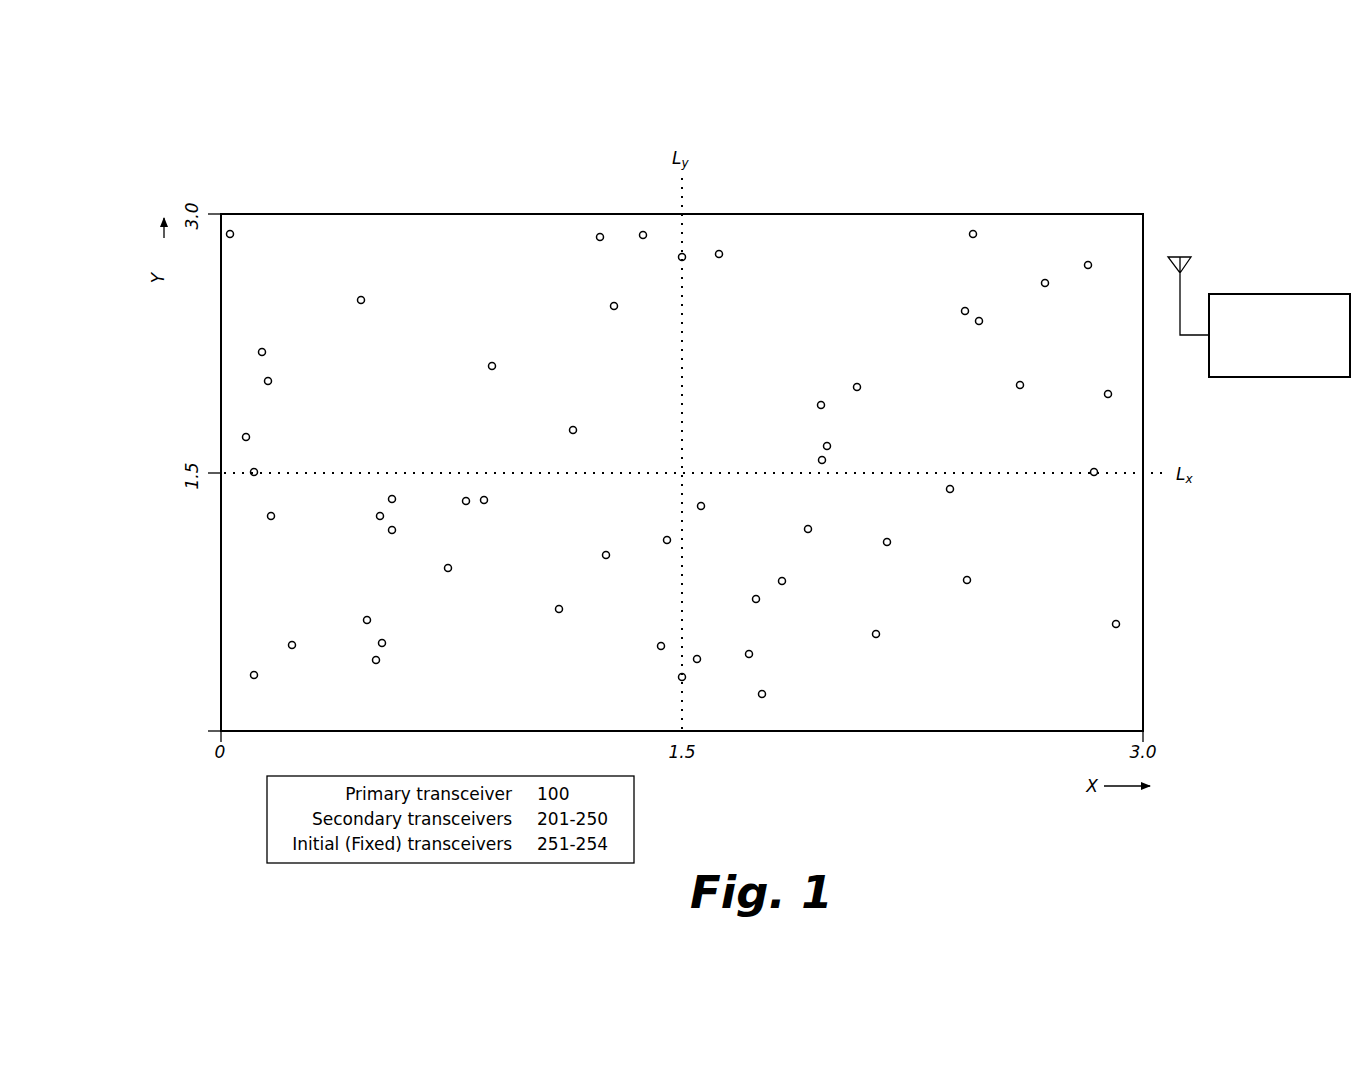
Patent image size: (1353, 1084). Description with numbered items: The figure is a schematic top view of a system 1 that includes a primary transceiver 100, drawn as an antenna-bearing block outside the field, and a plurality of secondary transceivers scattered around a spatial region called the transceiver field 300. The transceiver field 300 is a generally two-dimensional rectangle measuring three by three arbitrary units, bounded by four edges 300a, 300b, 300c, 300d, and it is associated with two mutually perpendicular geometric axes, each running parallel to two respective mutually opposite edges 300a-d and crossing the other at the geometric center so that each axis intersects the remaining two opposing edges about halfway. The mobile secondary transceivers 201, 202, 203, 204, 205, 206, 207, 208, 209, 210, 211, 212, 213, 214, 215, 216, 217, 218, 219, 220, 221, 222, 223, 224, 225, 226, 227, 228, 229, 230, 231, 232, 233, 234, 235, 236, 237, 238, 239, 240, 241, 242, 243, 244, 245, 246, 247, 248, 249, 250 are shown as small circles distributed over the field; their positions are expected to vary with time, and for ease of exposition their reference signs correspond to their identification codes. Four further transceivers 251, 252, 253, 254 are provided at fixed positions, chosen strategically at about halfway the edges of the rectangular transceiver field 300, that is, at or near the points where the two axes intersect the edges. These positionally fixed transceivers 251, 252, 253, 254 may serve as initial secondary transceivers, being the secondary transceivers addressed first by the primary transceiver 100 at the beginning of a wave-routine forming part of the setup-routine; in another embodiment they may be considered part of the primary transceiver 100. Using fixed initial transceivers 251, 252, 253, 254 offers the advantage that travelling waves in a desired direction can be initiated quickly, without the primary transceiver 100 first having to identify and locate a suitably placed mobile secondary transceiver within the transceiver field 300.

The system 1 is at (1228, 165).
The primary transceiver 100 is at (1293, 345).
The transceiver field 300 is at (446, 200).
The edge of the transceiver field 300a is at (908, 731).
The edge of the transceiver field 300b is at (789, 214).
The edge of the transceiver field 300c is at (221, 598).
The edge of the transceiver field 300d is at (1143, 579).
The secondary transceiver 201 is at (287, 385).
The secondary transceiver 202 is at (273, 680).
The secondary transceiver 203 is at (709, 650).
The secondary transceiver 204 is at (948, 308).
The secondary transceiver 205 is at (890, 646).
The secondary transceiver 206 is at (821, 471).
The secondary transceiver 207 is at (1101, 384).
The secondary transceiver 208 is at (956, 502).
The secondary transceiver 209 is at (631, 317).
The secondary transceiver 210 is at (309, 655).
The secondary transceiver 211 is at (363, 517).
The secondary transceiver 212 is at (996, 330).
The secondary transceiver 213 is at (292, 517).
The secondary transceiver 214 is at (709, 494).
The secondary transceiver 215 is at (803, 404).
The secondary transceiver 216 is at (501, 509).
The secondary transceiver 217 is at (248, 234).
The secondary transceiver 218 is at (389, 672).
The secondary transceiver 219 is at (573, 622).
The secondary transceiver 220 is at (685, 552).
The secondary transceiver 221 is at (1088, 254).
The secondary transceiver 222 is at (281, 348).
The secondary transceiver 223 is at (451, 493).
The secondary transceiver 224 is at (738, 261).
The secondary transceiver 225 is at (583, 237).
The secondary transceiver 226 is at (510, 376).
The secondary transceiver 227 is at (846, 439).
The secondary transceiver 228 is at (874, 378).
The secondary transceiver 229 is at (400, 646).
The secondary transceiver 230 is at (1118, 638).
The secondary transceiver 231 is at (265, 437).
The secondary transceiver 232 is at (1026, 398).
The secondary transceiver 233 is at (410, 540).
The secondary transceiver 234 is at (662, 234).
The secondary transceiver 235 is at (379, 307).
The secondary transceiver 236 is at (804, 518).
The secondary transceiver 237 is at (394, 490).
The secondary transceiver 238 is at (658, 637).
The secondary transceiver 239 is at (772, 610).
The secondary transceiver 240 is at (590, 443).
The secondary transceiver 241 is at (466, 577).
The secondary transceiver 242 is at (768, 573).
The secondary transceiver 243 is at (976, 246).
The secondary transceiver 244 is at (898, 555).
The secondary transceiver 245 is at (770, 652).
The secondary transceiver 246 is at (1045, 294).
The secondary transceiver 247 is at (970, 592).
The secondary transceiver 248 is at (782, 698).
The secondary transceiver 249 is at (620, 567).
The secondary transceiver 250 is at (368, 611).
The positionally fixed initial secondary transceiver 251 is at (690, 690).
The positionally fixed initial secondary transceiver 252 is at (686, 268).
The positionally fixed initial secondary transceiver 253 is at (274, 476).
The positionally fixed initial secondary transceiver 254 is at (1103, 483).